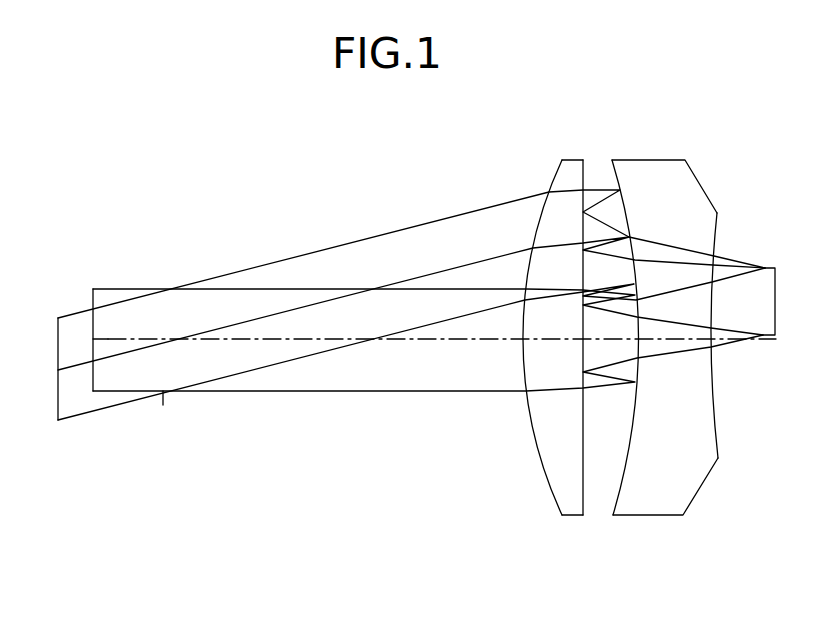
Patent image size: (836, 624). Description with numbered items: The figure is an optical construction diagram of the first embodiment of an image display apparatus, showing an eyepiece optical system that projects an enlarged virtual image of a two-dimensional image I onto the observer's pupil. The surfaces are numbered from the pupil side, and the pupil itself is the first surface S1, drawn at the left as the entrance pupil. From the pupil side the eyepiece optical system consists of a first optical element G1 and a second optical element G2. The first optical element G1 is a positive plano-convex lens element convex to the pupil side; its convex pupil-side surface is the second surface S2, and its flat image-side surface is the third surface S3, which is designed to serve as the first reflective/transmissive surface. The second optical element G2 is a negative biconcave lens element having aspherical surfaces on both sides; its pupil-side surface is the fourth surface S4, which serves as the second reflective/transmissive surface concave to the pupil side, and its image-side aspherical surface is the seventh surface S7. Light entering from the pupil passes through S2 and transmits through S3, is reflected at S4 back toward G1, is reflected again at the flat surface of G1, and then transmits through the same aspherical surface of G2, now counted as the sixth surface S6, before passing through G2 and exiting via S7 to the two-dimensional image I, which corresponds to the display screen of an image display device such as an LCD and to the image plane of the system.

The pupil surface S1 is at (163, 289).
The second surface S2 is at (560, 165).
The third surface S3 is at (578, 490).
The fourth surface S4 is at (613, 498).
The sixth surface S6 is at (625, 337).
The seventh surface S7 is at (712, 388).
The first optical element G1 is at (569, 160).
The second optical element G2 is at (650, 160).
The two-dimensional image I is at (781, 265).